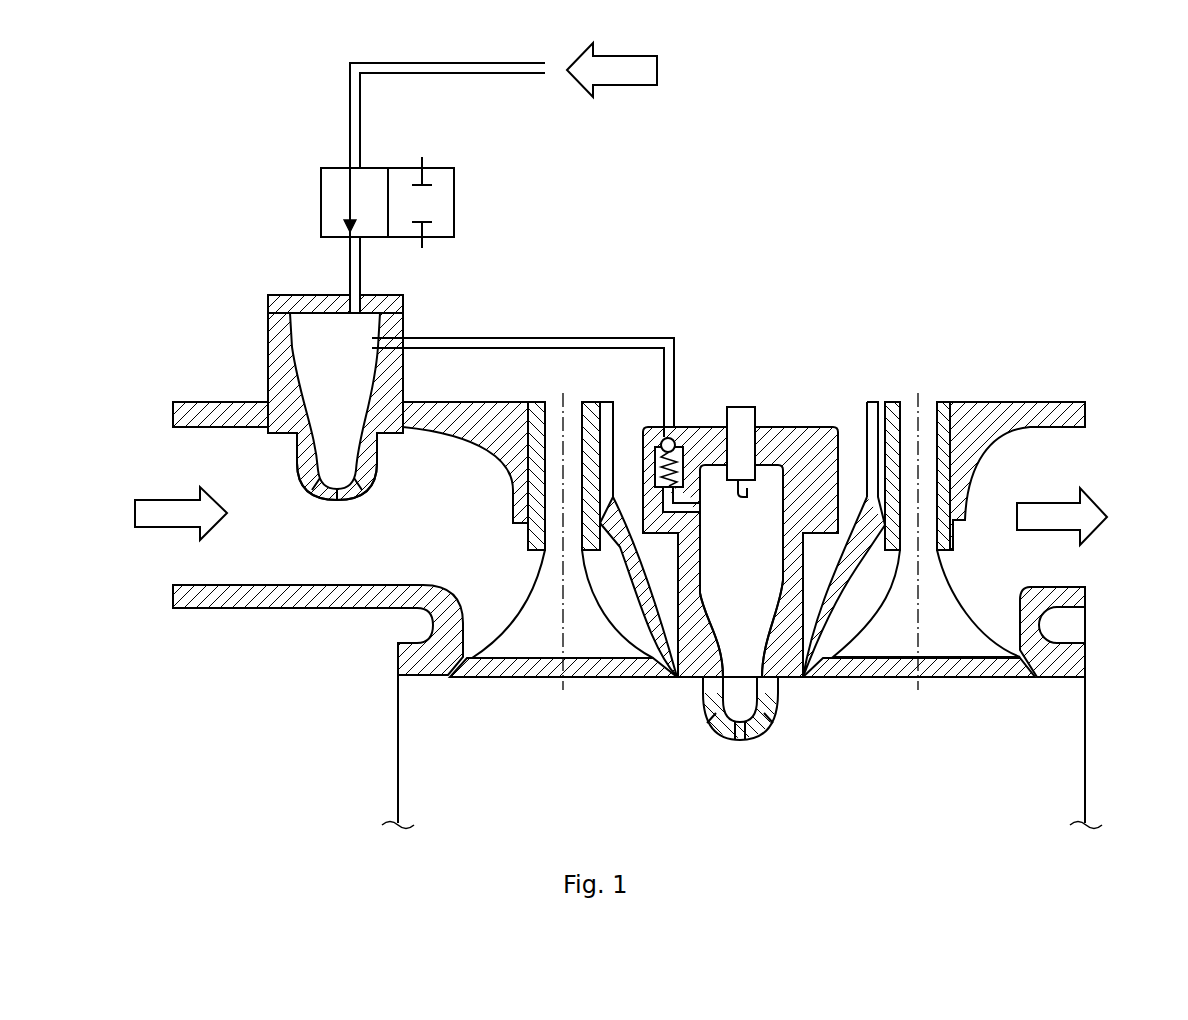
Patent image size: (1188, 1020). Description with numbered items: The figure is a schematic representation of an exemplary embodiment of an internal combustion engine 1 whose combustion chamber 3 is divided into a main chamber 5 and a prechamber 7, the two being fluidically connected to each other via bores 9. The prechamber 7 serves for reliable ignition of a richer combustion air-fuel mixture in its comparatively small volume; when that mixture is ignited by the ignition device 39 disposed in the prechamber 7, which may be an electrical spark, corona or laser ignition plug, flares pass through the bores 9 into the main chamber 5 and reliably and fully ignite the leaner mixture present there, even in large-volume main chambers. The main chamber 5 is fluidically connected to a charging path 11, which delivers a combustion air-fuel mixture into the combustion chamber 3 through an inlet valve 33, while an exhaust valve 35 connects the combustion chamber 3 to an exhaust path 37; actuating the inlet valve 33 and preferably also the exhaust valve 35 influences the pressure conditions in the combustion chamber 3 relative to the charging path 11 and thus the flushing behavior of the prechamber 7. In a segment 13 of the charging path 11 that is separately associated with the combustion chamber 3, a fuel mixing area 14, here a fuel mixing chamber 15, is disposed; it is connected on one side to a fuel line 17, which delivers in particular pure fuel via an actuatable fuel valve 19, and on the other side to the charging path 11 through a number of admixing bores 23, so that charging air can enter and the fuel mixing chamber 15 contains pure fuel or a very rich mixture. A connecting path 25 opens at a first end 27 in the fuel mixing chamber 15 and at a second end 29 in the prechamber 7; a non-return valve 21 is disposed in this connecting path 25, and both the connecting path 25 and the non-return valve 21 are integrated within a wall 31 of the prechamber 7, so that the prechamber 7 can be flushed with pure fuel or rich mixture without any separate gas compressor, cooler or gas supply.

The internal combustion engine 1 is at (1050, 86).
The combustion chamber 3 is at (1098, 716).
The main chamber 5 is at (847, 822).
The prechamber 7 is at (749, 647).
The bores 9 is at (767, 724).
The charging path 11 is at (230, 615).
The segment 13 is at (238, 578).
The fuel mixing area 14 is at (354, 373).
The fuel mixing chamber 15 is at (382, 457).
The fuel line 17 is at (362, 143).
The actuatable fuel valve 19 is at (455, 203).
The non-return valve 21 is at (672, 437).
The admixing bores 23 is at (368, 488).
The connecting path 25 is at (550, 338).
The first end 27 is at (405, 317).
The second end 29 is at (700, 515).
The wall 31 is at (790, 440).
The inlet valve 33 is at (515, 668).
The exhaust valve 35 is at (857, 668).
The exhaust path 37 is at (1068, 583).
The ignition device 39 is at (748, 487).